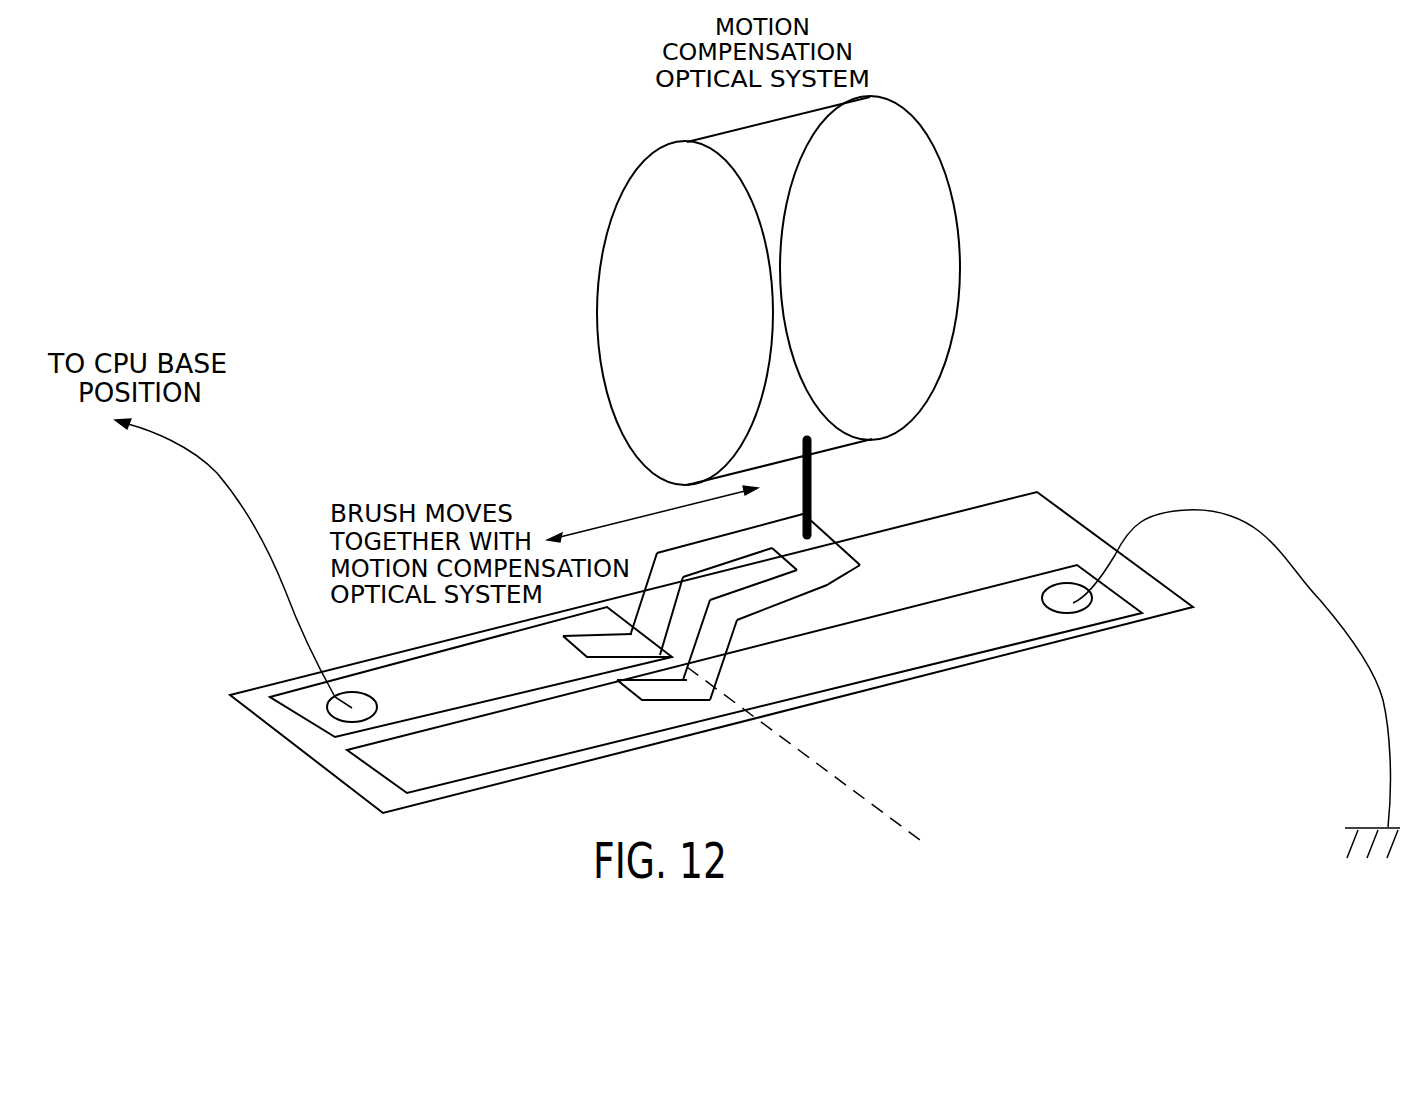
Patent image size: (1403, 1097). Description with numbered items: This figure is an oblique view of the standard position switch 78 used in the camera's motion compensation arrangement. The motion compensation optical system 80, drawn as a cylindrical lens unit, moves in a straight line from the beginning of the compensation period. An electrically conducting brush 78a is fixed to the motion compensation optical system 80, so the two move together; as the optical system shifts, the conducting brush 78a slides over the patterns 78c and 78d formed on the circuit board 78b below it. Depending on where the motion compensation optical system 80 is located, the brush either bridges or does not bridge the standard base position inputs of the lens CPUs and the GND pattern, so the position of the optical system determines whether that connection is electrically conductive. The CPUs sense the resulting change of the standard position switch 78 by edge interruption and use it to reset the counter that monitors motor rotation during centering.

The motion compensation optical system 80 is at (938, 150).
The standard position switch 78 is at (660, 798).
The electrically conducting brush 78a is at (838, 556).
The circuit board 78b is at (1005, 513).
The pattern 78c is at (335, 735).
The pattern 78d is at (405, 780).